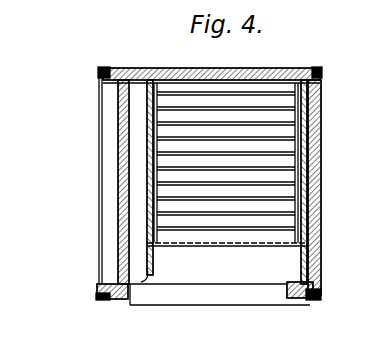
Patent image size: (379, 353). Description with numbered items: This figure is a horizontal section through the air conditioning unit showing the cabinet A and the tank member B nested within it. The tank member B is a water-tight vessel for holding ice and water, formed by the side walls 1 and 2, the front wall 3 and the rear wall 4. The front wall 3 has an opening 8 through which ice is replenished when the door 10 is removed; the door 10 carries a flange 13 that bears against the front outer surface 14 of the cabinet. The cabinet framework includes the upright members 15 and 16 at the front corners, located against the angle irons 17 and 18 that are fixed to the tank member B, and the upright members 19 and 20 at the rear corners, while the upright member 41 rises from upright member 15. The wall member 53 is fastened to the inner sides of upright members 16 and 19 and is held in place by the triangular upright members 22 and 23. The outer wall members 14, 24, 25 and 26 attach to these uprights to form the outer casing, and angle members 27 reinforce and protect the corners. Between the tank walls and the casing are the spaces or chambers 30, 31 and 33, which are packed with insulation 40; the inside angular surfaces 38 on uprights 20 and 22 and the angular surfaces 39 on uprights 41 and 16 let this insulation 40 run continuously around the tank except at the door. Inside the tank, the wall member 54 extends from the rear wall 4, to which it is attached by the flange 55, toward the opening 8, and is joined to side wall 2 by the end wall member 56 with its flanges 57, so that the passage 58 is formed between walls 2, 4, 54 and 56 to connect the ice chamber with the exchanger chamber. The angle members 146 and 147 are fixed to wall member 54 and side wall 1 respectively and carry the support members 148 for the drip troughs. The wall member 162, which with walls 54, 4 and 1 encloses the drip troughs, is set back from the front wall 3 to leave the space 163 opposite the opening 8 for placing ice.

The side wall 1 is at (315, 262).
The side wall 2 is at (118, 213).
The front wall 3 is at (282, 286).
The rear wall 4 is at (281, 69).
The opening 8 is at (245, 283).
The door 10 is at (232, 306).
The flange 13 is at (295, 300).
The front outer surface 14 is at (306, 300).
The upright member 15 is at (300, 300).
The upright member 16 is at (105, 300).
The angle iron 17 is at (118, 265).
The angle iron 18 is at (297, 280).
The upright member 19 is at (114, 67).
The upright member 20 is at (322, 72).
The triangular upright member 22 is at (118, 68).
The triangular upright member 23 is at (116, 300).
The outer wall member 24 is at (100, 156).
The outer wall member 25 is at (182, 69).
The outer wall member 26 is at (318, 160).
The angle member 27 is at (322, 76).
The space or chamber 30 is at (224, 69).
The space or chamber 31 is at (318, 131).
The space or chamber 33 is at (118, 186).
The inside angular surface 38 is at (136, 69).
The angular surface 39 is at (313, 278).
The insulation 40 is at (272, 69).
The upright member 41 is at (318, 292).
The wall member 53 is at (118, 128).
The wall member 54 is at (140, 232).
The flange 55 is at (136, 84).
The end wall member 56 is at (146, 280).
The flange 57 is at (118, 247).
The passage or chamber 58 is at (142, 200).
The cabinet A is at (316, 245).
The tank member B is at (252, 69).
The angle member 146 is at (150, 188).
The angle member 147 is at (295, 130).
The support member 148 is at (298, 144).
The wall member 162 is at (224, 248).
The space 163 is at (180, 277).